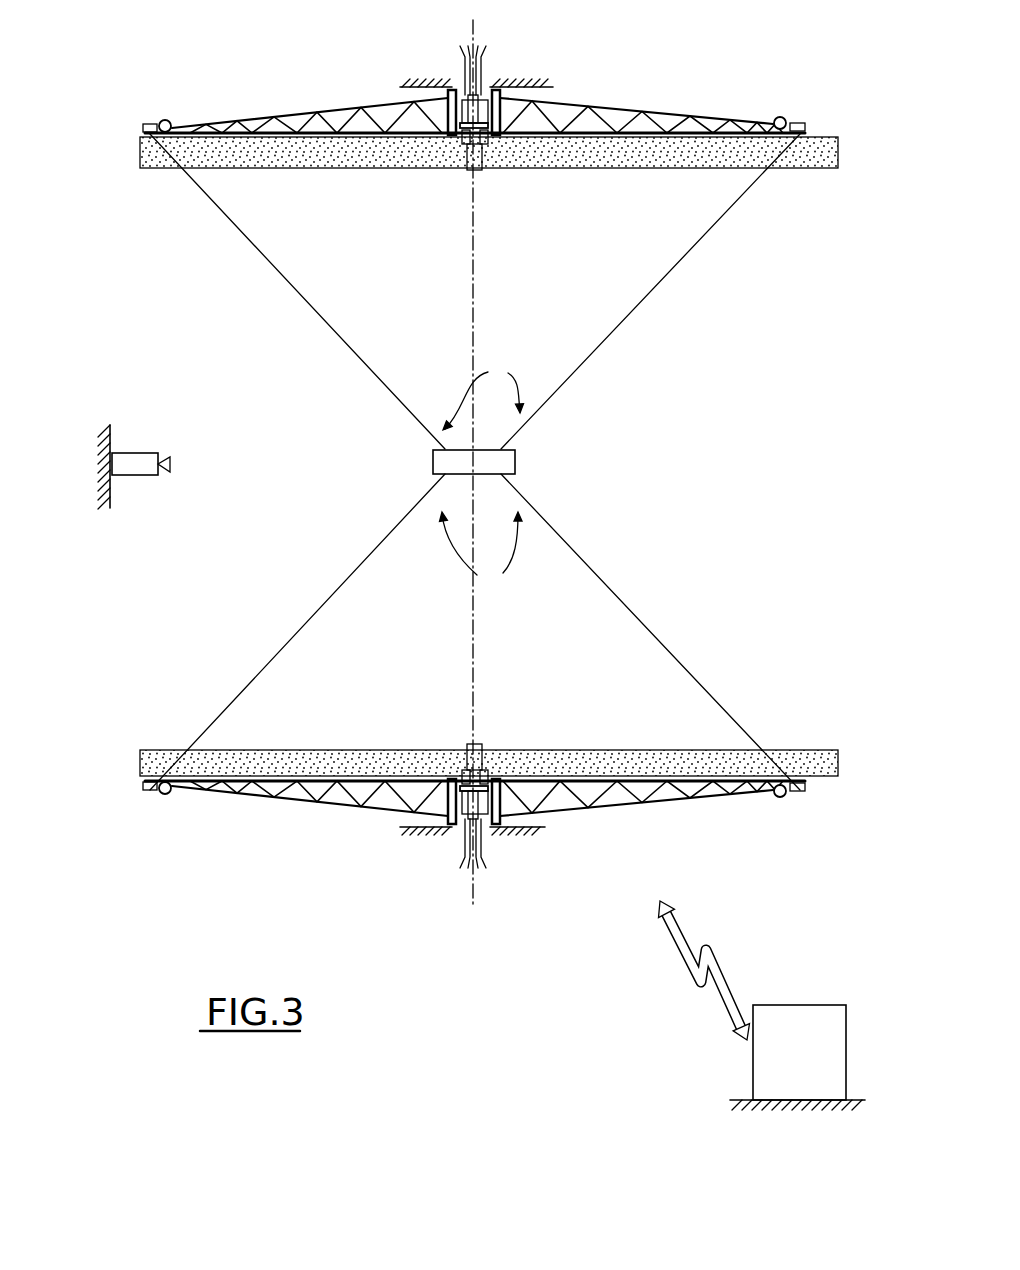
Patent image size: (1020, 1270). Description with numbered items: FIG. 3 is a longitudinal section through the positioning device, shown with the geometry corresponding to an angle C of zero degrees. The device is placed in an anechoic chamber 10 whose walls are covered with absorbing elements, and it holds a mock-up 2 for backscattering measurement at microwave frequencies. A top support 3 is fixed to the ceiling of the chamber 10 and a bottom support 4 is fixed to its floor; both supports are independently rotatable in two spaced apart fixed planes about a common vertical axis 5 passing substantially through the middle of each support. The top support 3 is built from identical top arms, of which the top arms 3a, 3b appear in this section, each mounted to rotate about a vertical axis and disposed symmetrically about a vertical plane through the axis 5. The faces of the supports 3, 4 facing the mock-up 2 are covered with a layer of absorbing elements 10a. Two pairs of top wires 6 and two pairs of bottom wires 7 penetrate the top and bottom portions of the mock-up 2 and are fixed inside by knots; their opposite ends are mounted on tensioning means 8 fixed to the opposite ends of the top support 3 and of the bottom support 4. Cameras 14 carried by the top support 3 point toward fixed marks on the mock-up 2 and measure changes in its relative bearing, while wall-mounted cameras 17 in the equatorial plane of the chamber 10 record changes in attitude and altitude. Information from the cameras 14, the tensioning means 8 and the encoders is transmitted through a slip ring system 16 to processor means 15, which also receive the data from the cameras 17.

The mock-up 2 is at (510, 462).
The top support 3 is at (690, 92).
The top arm 3a is at (250, 116).
The top arm 3b is at (624, 106).
The bottom support 4 is at (656, 810).
The vertical axis 5 is at (476, 288).
The top wires 6 is at (483, 389).
The bottom wires 7 is at (481, 554).
The tensioning means 8 is at (158, 114).
The anechoic chamber 10 is at (528, 78).
The layer of absorbing elements 10a is at (616, 152).
The cameras 14 is at (483, 140).
The processor means 15 is at (815, 1062).
The slip ring system 16 is at (468, 92).
The cameras 17 is at (143, 465).